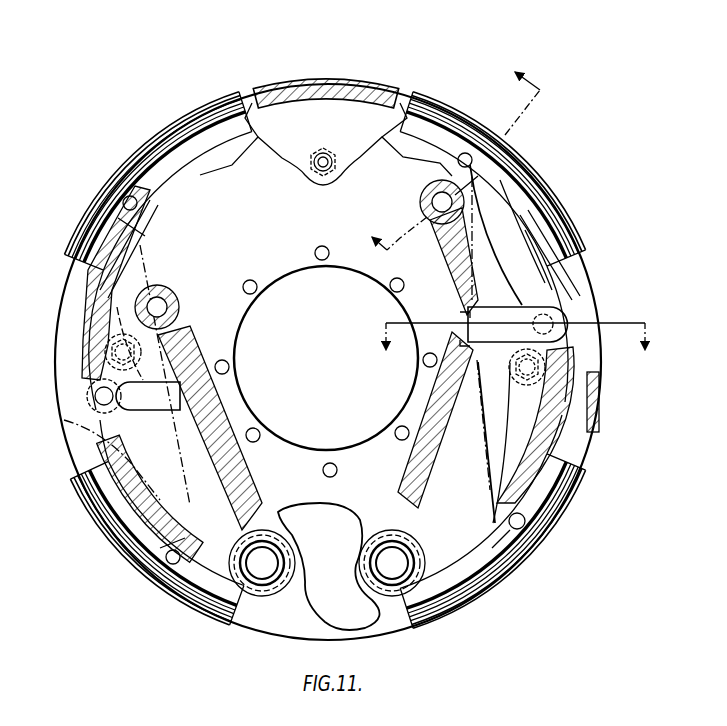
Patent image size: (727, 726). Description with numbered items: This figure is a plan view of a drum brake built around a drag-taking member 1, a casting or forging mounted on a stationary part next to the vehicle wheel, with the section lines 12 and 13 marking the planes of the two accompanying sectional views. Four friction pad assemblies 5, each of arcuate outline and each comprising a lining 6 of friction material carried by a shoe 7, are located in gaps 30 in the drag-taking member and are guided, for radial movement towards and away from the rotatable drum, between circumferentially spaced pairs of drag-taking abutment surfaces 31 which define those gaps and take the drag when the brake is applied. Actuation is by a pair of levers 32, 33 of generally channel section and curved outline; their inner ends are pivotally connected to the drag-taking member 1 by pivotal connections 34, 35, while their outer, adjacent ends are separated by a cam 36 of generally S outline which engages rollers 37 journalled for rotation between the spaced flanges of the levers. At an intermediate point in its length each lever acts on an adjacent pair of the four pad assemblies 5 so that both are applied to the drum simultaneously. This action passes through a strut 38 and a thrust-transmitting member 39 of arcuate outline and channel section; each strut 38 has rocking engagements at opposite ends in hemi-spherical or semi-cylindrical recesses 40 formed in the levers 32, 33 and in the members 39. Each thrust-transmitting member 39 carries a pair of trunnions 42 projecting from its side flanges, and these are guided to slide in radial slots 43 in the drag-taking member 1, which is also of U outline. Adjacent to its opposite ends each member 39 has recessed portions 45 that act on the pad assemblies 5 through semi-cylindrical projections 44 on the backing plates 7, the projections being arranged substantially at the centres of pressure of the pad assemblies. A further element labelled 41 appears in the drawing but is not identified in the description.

The drag-taking member 1 is at (362, 138).
The friction pad assembly 5 is at (160, 152).
The lining 6 is at (180, 140).
The shoe 7 is at (192, 142).
The section line 12— 12 is at (515, 349).
The section line 13— 13 is at (445, 148).
The gap 30 is at (236, 128).
The drag-taking abutment surface 31 is at (245, 118).
The lever 32 is at (458, 348).
The lever 33 is at (200, 404).
The pivotal connection 34 is at (442, 205).
The pivotal connection 35 is at (162, 305).
The cam 36 is at (318, 530).
The roller 37 is at (262, 540).
The strut 38 is at (470, 322).
The thrust-transmitting member 39 is at (112, 252).
The recess 40 is at (445, 286).
The pad 41 is at (95, 396).
The trunnion 42 is at (516, 360).
The radial slot 43 is at (520, 380).
The semi-cylindrical projection 44 is at (124, 200).
The recessed portion 45 is at (118, 218).